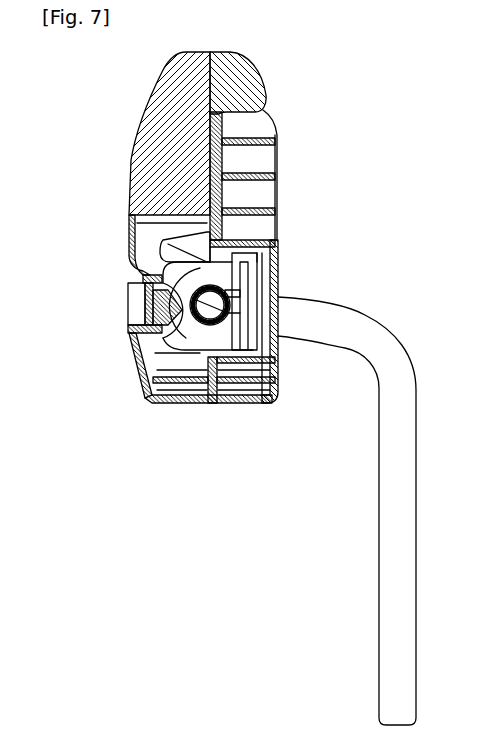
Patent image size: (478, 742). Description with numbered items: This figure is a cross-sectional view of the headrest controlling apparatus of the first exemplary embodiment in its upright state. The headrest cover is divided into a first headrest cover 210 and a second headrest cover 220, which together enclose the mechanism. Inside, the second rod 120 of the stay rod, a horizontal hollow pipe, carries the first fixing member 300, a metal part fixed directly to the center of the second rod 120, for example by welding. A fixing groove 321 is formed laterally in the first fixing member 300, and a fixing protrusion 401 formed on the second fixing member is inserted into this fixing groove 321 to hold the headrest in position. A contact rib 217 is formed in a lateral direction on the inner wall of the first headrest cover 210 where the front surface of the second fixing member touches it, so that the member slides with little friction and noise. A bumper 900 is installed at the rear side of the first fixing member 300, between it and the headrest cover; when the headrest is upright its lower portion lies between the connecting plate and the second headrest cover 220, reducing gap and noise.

The first headrest cover 210 is at (158, 110).
The second headrest cover 220 is at (253, 87).
The fixing groove 321 is at (160, 288).
The contact rib 217 is at (151, 298).
The fixing protrusion 401 is at (182, 314).
The first fixing member 300 is at (212, 342).
The second rod 120 is at (220, 318).
The bumper 900 is at (253, 288).